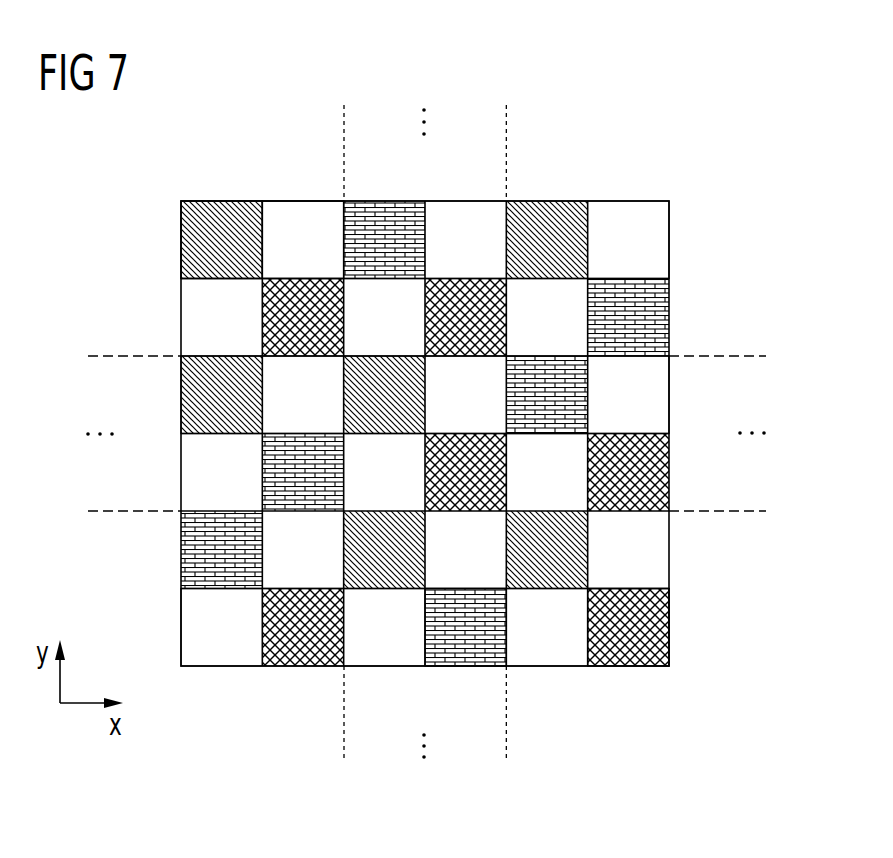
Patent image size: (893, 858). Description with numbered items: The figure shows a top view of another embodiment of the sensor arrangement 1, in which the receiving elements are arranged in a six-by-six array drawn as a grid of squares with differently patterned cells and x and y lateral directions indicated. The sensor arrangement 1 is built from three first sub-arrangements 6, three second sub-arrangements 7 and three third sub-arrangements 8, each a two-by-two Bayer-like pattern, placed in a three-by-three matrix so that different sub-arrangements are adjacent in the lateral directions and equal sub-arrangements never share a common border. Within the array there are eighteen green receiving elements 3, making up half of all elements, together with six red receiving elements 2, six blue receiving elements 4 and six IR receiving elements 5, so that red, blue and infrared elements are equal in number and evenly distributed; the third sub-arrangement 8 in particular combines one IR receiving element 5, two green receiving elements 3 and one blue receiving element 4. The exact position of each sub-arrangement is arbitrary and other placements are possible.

The sensor arrangement 1 is at (633, 152).
The red receiving element 2 is at (222, 212).
The green receiving element 3 is at (302, 212).
The blue receiving element 4 is at (633, 650).
The IR receiving element 5 is at (480, 650).
The first sub-arrangement 6 is at (181, 237).
The second sub-arrangement 7 is at (181, 391).
The third sub-arrangement 8 is at (181, 623).